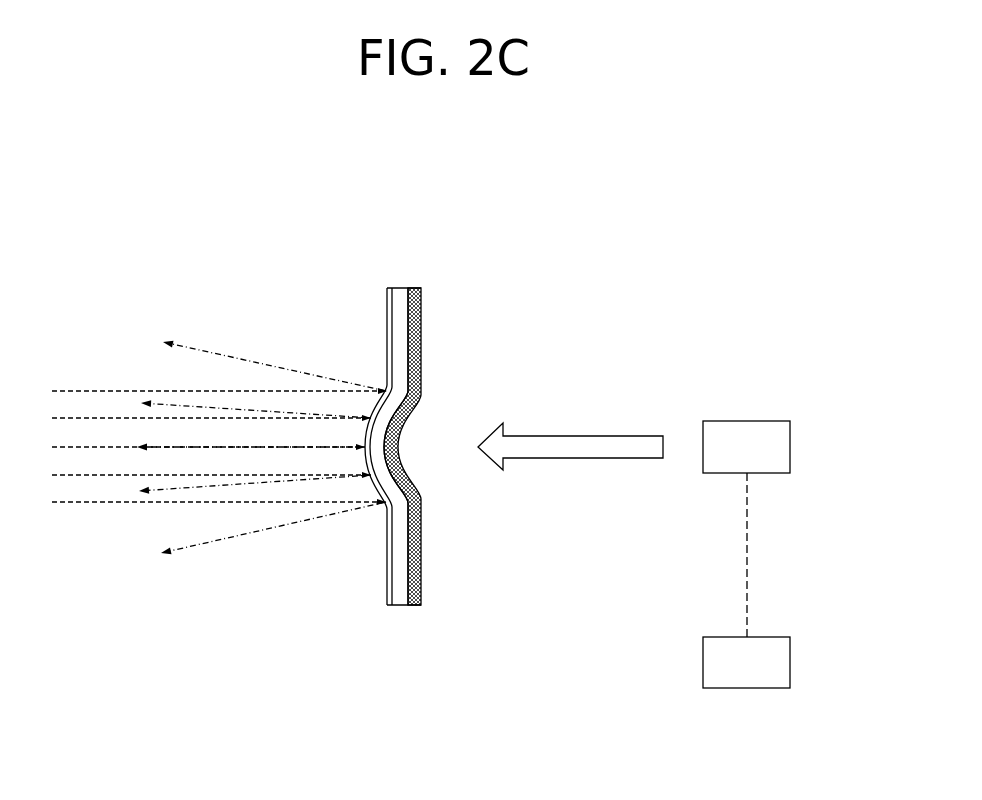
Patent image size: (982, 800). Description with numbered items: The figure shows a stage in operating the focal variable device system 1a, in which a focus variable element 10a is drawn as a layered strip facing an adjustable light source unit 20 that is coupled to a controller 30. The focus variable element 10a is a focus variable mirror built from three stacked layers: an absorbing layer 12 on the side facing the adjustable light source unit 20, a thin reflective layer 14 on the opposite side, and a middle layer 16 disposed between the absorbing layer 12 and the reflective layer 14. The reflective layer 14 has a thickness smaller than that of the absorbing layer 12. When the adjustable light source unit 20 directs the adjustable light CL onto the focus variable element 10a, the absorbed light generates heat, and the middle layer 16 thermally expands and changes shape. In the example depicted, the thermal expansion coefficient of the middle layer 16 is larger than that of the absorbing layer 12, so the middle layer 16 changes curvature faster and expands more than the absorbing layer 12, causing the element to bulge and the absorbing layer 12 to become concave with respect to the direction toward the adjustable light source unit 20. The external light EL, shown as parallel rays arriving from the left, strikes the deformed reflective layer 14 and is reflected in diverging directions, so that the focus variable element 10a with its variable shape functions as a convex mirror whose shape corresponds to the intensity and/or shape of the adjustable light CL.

The focal variable device system 1a is at (852, 203).
The focus variable element 10a is at (408, 276).
The absorbing layer 12 is at (413, 305).
The reflective layer 14 is at (390, 369).
The middle layer 16 is at (400, 338).
The adjustable light source unit 20 is at (768, 414).
The controller 30 is at (790, 662).
The external light EL is at (96, 391).
The adjustable light CL is at (602, 436).